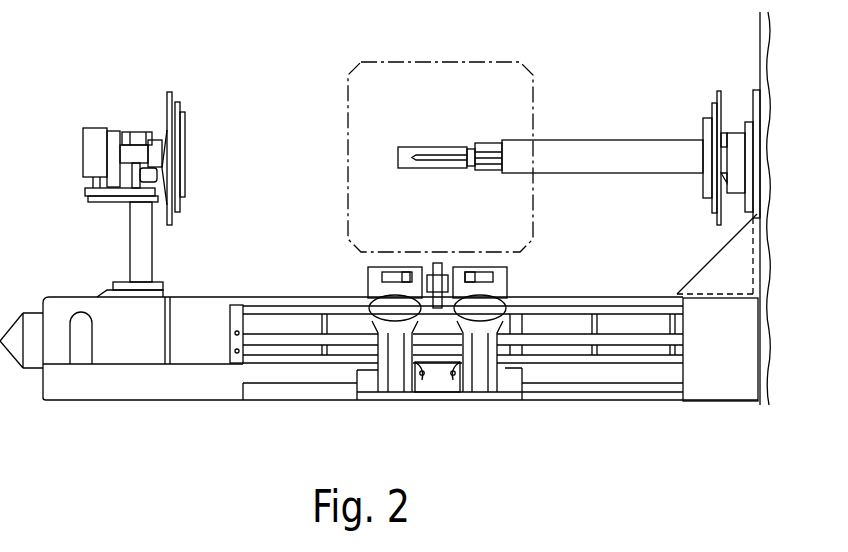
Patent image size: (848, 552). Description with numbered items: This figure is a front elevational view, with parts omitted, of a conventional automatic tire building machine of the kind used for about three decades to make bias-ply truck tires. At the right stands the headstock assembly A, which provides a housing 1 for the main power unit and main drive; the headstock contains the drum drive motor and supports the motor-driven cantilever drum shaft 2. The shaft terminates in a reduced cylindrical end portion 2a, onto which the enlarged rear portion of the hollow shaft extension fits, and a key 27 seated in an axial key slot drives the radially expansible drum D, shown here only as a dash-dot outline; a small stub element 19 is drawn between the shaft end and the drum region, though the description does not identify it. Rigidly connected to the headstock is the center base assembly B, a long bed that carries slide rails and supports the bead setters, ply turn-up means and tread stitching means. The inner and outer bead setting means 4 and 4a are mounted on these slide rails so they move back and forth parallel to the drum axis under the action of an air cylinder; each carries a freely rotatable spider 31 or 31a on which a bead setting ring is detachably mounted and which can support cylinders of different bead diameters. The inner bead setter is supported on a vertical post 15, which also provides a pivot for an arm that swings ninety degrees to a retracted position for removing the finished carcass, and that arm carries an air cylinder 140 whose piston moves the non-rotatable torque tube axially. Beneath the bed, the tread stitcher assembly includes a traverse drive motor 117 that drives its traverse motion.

The air cylinder 140 is at (128, 131).
The spider 31 is at (165, 113).
The inner bead setting means 4 is at (180, 114).
The vertical post 15 is at (153, 258).
The center base assembly B is at (69, 289).
The traverse drive motor 117 is at (710, 393).
The radially expansible drum D is at (463, 60).
The reduced cylindrical end portion 2a is at (417, 146).
The key 27 is at (448, 163).
The coupling stub 19 is at (474, 142).
The drum shaft 2 is at (603, 139).
The outer bead setting means 4a is at (703, 118).
The spider 31a is at (717, 217).
The housing 1 is at (760, 70).
The headstock assembly A is at (752, 48).